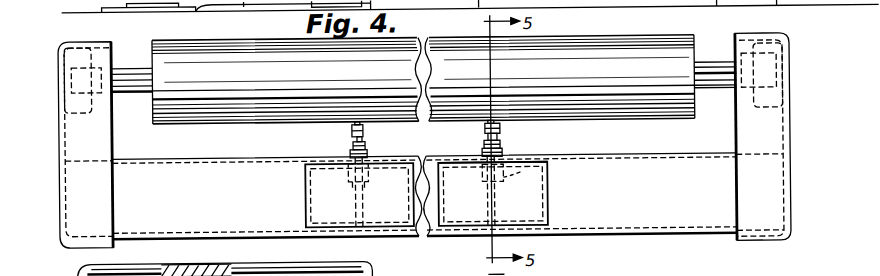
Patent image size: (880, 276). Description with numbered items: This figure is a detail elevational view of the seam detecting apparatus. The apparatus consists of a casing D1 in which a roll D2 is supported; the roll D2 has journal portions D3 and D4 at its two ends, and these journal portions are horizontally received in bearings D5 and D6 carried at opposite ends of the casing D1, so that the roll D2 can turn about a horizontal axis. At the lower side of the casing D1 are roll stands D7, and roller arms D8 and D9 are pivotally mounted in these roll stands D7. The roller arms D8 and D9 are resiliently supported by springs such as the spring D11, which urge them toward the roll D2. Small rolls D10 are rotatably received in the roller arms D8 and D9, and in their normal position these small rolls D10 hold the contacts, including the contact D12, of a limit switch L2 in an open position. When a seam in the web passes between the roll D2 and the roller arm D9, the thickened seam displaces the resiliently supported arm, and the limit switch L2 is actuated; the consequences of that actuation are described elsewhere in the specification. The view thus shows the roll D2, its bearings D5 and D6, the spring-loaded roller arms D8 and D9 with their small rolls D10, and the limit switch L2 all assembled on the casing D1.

The casing D1 is at (790, 131).
The roll D2 is at (637, 45).
The journal portion D3 is at (124, 67).
The journal portion D4 is at (712, 69).
The bearing D5 is at (51, 61).
The bearing D6 is at (787, 54).
The roll stand D7 is at (543, 199).
The roller arm D8 is at (366, 145).
The roller arm D9 is at (502, 132).
The small roll D10 is at (485, 125).
The spring D11 is at (350, 151).
The contact D12 is at (352, 143).
The limit switch L2 is at (545, 161).